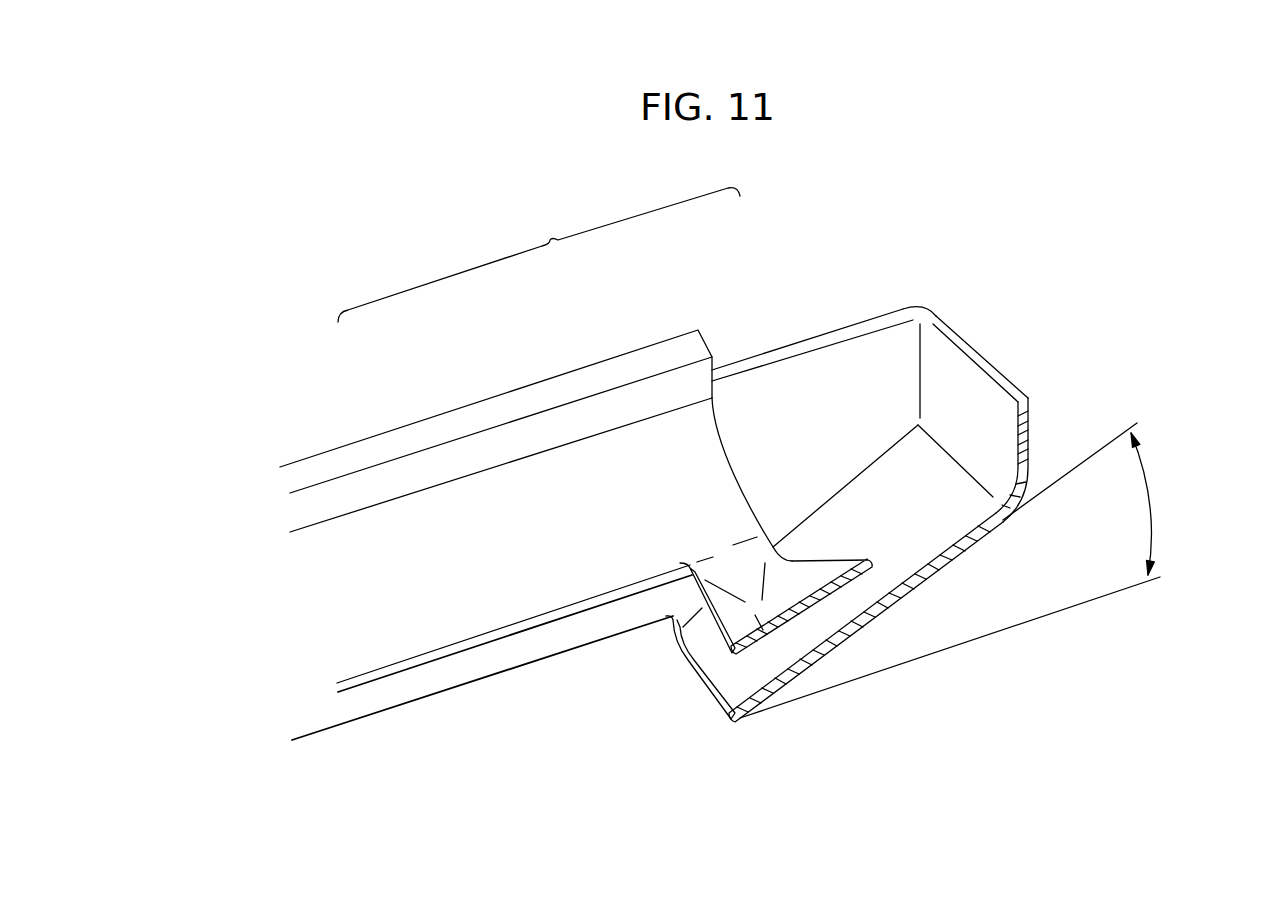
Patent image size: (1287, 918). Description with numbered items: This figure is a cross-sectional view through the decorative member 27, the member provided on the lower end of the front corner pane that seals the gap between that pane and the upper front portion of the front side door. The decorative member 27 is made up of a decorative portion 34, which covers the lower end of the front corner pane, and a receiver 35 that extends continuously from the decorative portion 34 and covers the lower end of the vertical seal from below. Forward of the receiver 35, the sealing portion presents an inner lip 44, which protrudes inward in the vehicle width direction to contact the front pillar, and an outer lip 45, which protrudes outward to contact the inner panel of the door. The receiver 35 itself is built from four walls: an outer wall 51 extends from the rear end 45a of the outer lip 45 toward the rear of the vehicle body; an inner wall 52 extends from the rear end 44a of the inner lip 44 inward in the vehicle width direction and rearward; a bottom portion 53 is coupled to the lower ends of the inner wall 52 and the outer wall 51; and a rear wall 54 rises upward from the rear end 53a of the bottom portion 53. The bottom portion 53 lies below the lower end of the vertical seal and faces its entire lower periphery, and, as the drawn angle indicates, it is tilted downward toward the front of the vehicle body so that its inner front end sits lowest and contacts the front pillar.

The decorative member 27 is at (539, 255).
The decorative portion 34 is at (408, 425).
The receiver 35 is at (777, 345).
The inner lip 44 is at (505, 597).
The rear end of the inner lip 44a is at (740, 533).
The outer lip 45 is at (417, 688).
The rear end of the outer lip 45a is at (651, 614).
The outer wall 51 is at (840, 377).
The inner wall 52 is at (780, 602).
The bottom portion 53 is at (900, 563).
The rear end of the bottom portion 53a is at (977, 478).
The rear wall 54 is at (963, 393).